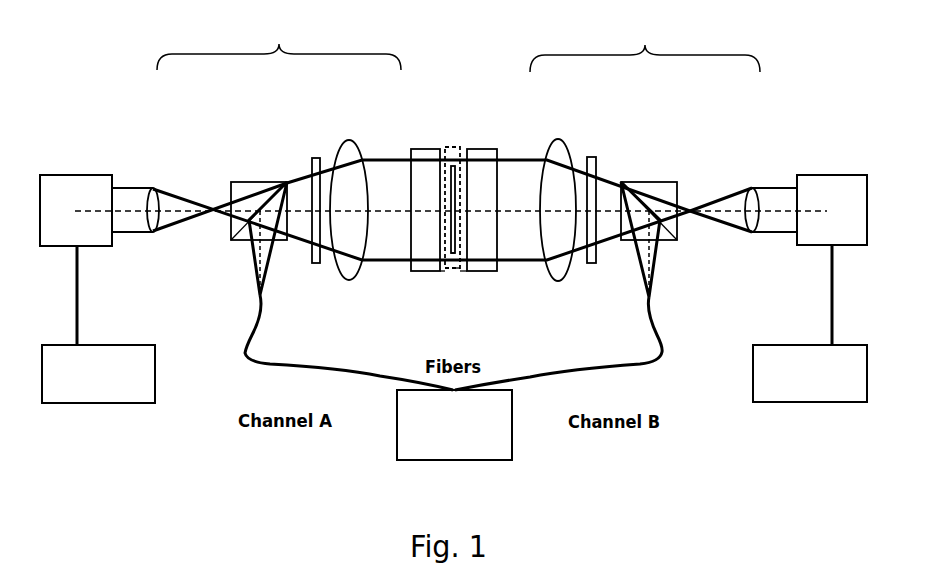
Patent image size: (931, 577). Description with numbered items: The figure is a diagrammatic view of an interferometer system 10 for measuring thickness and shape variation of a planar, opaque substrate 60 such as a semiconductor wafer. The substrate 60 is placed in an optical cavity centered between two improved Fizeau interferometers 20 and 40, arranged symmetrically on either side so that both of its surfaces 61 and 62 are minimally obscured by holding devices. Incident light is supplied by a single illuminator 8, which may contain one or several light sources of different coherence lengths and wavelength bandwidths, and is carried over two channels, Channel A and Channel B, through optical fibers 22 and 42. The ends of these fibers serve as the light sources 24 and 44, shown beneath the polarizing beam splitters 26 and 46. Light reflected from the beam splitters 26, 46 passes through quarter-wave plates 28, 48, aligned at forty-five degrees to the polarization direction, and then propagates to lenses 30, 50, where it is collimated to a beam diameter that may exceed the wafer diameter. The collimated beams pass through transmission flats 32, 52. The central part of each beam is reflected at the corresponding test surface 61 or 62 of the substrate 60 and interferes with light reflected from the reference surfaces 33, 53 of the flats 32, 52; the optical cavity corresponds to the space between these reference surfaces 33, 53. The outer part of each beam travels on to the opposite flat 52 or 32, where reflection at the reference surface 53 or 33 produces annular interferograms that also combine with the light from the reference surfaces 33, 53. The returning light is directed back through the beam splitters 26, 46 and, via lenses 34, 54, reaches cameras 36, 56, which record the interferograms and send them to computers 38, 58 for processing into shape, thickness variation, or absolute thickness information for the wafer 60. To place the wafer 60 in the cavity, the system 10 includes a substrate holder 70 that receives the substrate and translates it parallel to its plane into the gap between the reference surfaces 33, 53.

The illuminator 8 is at (500, 410).
The interferometer system 10 is at (106, 52).
The Fizeau interferometer 20 is at (279, 46).
The optical fiber 22 is at (245, 358).
The light source 24 is at (258, 293).
The polarizing beam splitter 26 is at (257, 188).
The quarter-wave plate 28 is at (316, 165).
The lens 30 is at (352, 141).
The transmission flat 32 is at (427, 182).
The reference surface 33 is at (443, 272).
The lens 34 is at (154, 189).
The camera 36 is at (80, 175).
The computer 38 is at (112, 363).
The Fizeau interferometer 40 is at (645, 47).
The optical fiber 42 is at (660, 362).
The light source 44 is at (652, 293).
The polarizing beam splitter 46 is at (672, 188).
The quarter-wave plate 48 is at (598, 166).
The lens 50 is at (562, 140).
The transmission flat 52 is at (482, 182).
The reference surface 53 is at (460, 266).
The lens 54 is at (759, 212).
The camera 56 is at (830, 175).
The computer 58 is at (780, 358).
The substrate 60 is at (452, 254).
The test surface 61 is at (449, 186).
The test surface 62 is at (456, 193).
The substrate holder 70 is at (458, 270).